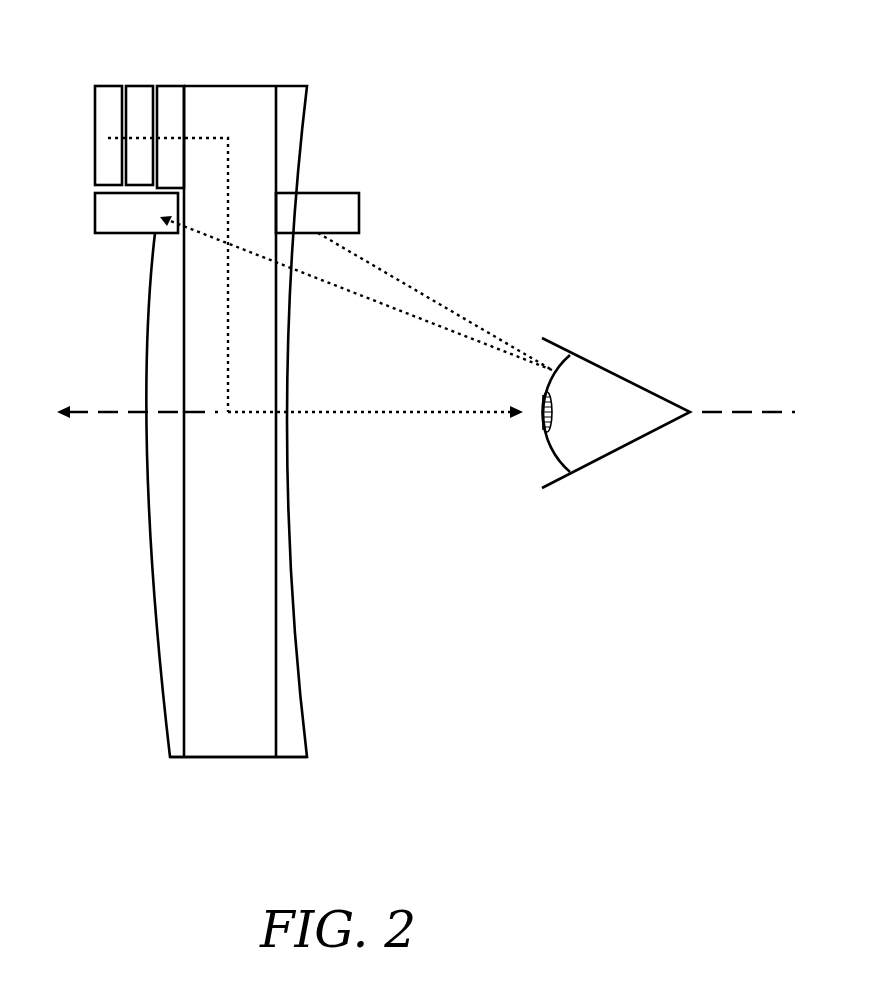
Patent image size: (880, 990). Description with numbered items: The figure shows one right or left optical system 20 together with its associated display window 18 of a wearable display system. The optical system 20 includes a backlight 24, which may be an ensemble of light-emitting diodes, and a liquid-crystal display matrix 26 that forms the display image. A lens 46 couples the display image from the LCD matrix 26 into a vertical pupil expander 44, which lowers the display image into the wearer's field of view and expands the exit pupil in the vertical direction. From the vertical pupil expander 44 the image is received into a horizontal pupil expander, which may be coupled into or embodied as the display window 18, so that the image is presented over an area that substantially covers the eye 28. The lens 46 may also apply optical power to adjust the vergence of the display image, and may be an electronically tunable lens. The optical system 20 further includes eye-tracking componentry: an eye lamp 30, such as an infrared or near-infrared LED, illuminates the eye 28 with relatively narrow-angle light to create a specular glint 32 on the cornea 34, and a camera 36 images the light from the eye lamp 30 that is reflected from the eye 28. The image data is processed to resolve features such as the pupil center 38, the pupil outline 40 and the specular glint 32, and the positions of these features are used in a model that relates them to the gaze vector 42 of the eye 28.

The display window 18 is at (157, 633).
The optical system 20 is at (411, 167).
The backlight 24 is at (95, 138).
The liquid-crystal display (LCD) matrix 26 is at (141, 86).
The lens 46 is at (171, 86).
The camera 36 is at (136, 213).
The eye lamp 30 is at (317, 213).
The specular glint 32 is at (357, 293).
The gaze vector 42 is at (412, 416).
The eye 28 is at (616, 413).
The cornea 34 is at (550, 443).
The pupil center 38 is at (543, 418).
The pupil outline 40 is at (553, 428).
The vertical pupil expander 44 is at (238, 421).